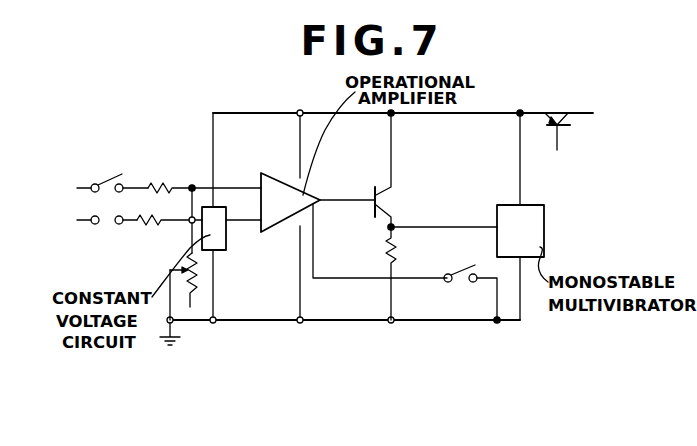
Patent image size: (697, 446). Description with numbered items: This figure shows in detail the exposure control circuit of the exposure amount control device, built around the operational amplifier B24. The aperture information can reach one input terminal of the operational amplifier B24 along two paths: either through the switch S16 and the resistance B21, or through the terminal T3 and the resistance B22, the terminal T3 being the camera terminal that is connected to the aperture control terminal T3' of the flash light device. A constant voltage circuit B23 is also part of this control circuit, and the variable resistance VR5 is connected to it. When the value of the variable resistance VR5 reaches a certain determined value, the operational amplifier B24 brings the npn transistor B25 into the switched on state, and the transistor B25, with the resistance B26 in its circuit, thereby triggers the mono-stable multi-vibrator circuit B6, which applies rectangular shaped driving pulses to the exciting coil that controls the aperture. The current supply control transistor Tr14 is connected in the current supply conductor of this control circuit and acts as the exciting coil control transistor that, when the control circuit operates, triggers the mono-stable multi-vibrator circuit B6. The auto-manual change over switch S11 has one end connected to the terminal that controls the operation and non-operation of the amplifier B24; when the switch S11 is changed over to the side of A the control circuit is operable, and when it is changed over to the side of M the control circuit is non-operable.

The switch S16 is at (112, 174).
The resistance B21 is at (168, 176).
The resistance B22 is at (162, 234).
The aperture control terminal T3' is at (86, 242).
The terminal T3 is at (123, 242).
The constant voltage circuit B23 is at (226, 240).
The variable resistance VR5 is at (198, 273).
The operational amplifier B24 is at (318, 202).
The npn transistor B25 is at (388, 192).
The resistance B26 is at (377, 273).
The mono-stable multi-vibrator circuit B6 is at (520, 231).
The auto-manual change over switch S11 is at (470, 292).
The current supply control transistor Tr14 is at (560, 135).